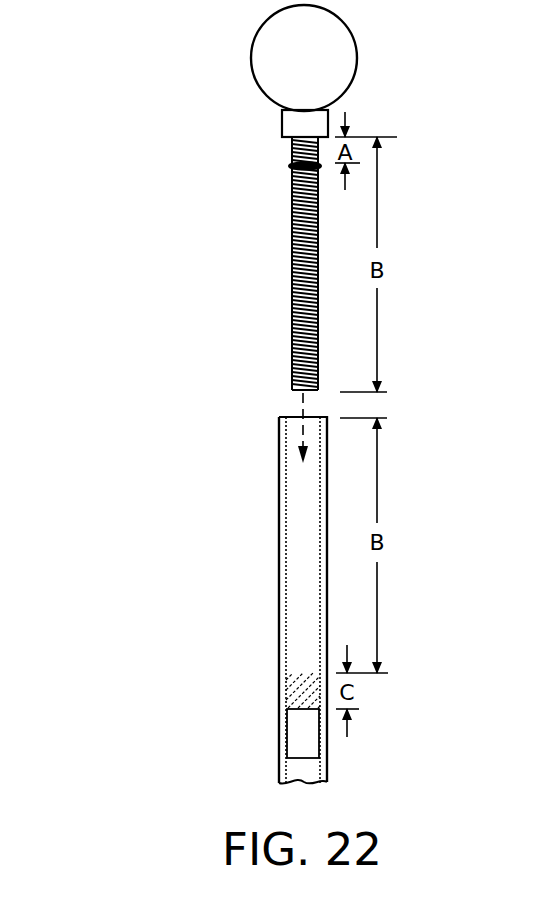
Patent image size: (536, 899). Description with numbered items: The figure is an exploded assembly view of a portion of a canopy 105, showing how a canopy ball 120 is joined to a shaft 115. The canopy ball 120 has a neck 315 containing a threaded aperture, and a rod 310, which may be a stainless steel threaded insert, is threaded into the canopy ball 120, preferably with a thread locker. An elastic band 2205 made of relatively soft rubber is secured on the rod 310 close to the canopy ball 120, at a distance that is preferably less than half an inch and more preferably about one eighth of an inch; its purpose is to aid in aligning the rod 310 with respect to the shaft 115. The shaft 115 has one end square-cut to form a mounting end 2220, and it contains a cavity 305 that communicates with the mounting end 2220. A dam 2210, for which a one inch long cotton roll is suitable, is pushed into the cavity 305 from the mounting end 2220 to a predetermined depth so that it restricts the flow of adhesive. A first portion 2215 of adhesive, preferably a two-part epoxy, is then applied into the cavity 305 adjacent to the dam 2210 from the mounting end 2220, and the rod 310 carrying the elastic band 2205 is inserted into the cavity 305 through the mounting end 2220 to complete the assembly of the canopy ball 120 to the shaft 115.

The canopy ball 120 is at (228, 56).
The neck 315 is at (300, 124).
The elastic band 2205 is at (290, 167).
The rod 310 is at (292, 305).
The mounting end 2220 is at (251, 418).
The canopy 105 is at (153, 571).
The cavity 305 is at (300, 528).
The shaft 115 is at (279, 632).
The first portion of adhesive 2215 is at (300, 692).
The dam 2210 is at (305, 732).